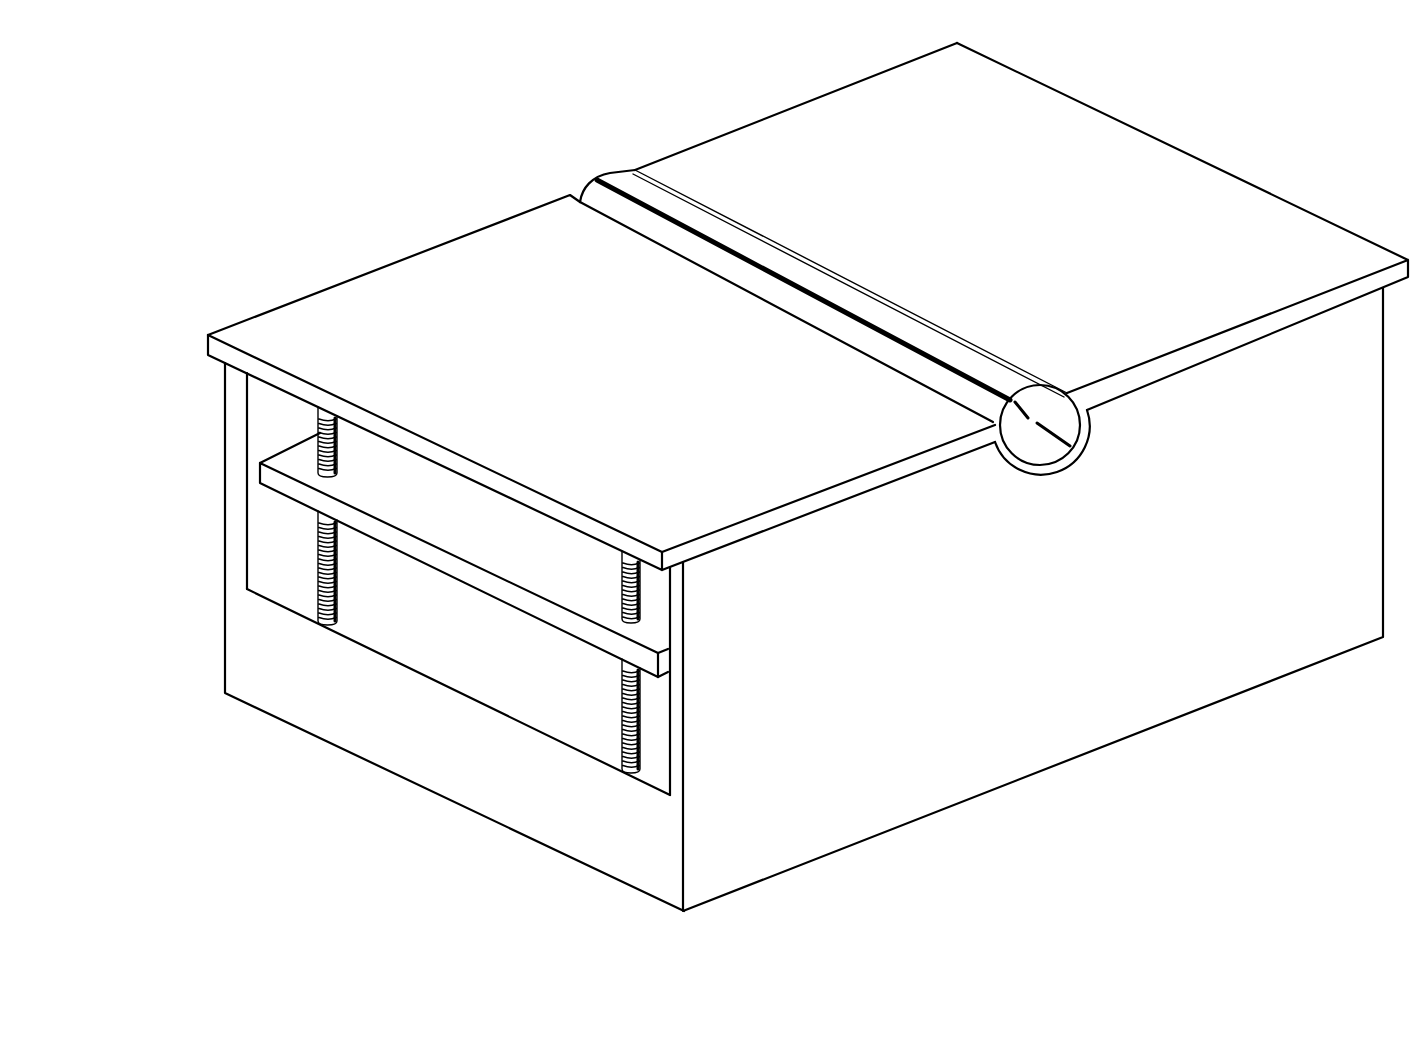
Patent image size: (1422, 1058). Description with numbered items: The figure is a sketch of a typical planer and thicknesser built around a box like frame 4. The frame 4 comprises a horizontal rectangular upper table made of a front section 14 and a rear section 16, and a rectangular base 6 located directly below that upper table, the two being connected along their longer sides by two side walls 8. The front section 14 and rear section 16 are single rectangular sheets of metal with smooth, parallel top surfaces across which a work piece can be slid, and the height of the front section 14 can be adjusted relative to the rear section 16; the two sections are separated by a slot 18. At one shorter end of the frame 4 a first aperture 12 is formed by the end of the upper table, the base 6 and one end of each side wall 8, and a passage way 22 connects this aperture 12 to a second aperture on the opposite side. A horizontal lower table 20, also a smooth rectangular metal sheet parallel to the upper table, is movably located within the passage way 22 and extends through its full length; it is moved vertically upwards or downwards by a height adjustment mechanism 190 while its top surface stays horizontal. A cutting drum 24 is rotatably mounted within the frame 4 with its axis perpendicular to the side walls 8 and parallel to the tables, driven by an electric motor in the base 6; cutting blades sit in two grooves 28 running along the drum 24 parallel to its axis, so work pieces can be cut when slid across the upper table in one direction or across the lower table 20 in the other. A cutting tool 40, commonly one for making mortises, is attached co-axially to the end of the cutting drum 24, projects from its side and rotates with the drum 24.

The box like frame 4 is at (377, 160).
The base 6 is at (420, 755).
The side walls 8 is at (964, 634).
The first aperture 12 is at (288, 578).
The front section 14 is at (575, 380).
The rear section 16 is at (1033, 229).
The slot 18 is at (578, 193).
The lower table 20 is at (300, 460).
The passage way 22 is at (483, 663).
The cutting drum 24 is at (796, 99).
The grooves 28 is at (608, 178).
The cutting tool 40 is at (1052, 437).
The height adjustment mechanism 190 is at (318, 418).